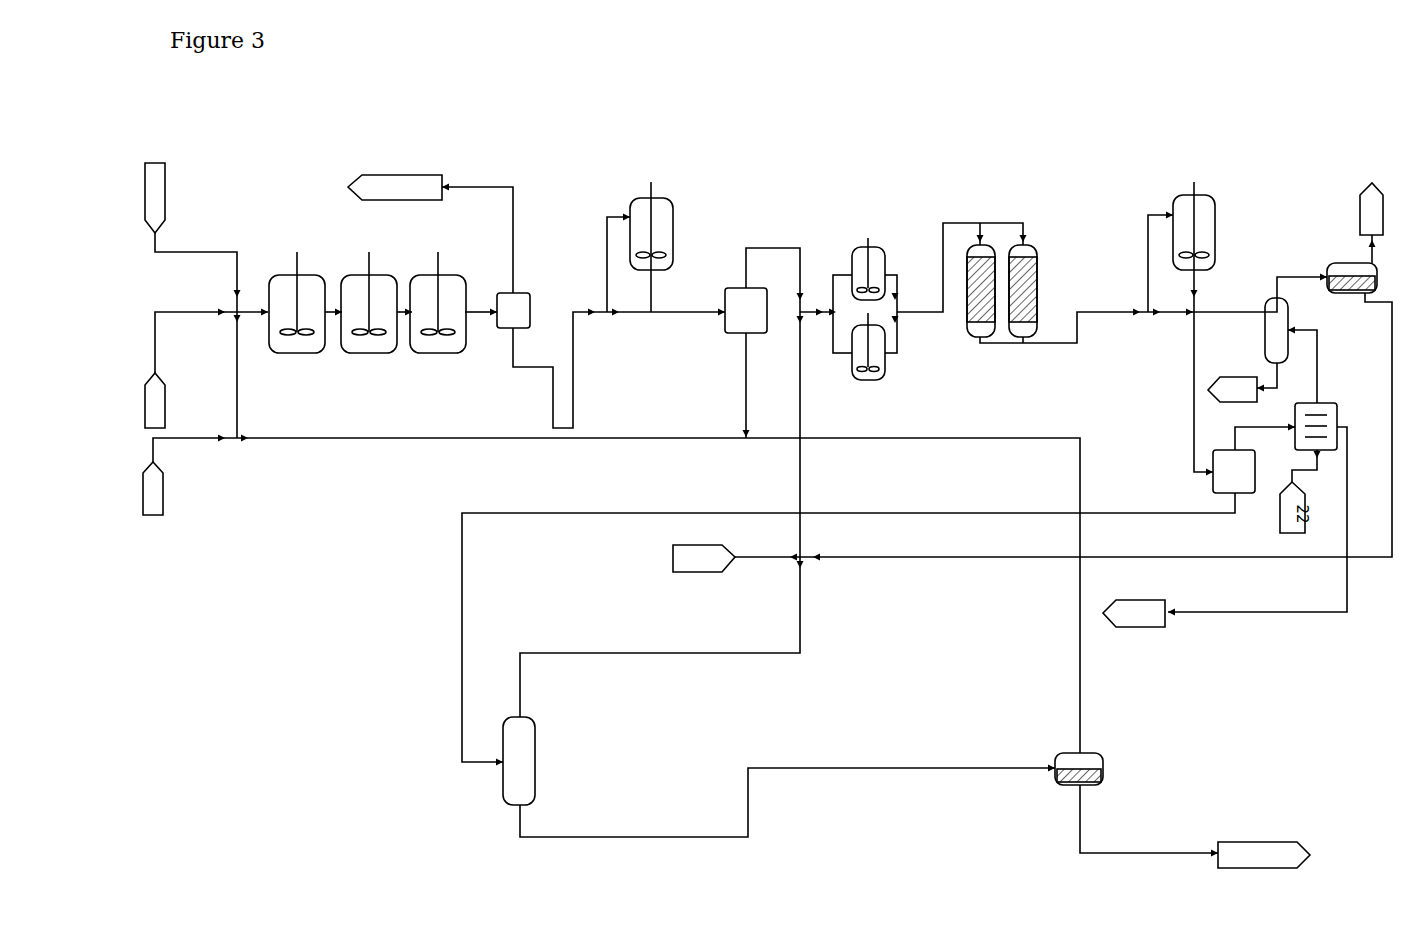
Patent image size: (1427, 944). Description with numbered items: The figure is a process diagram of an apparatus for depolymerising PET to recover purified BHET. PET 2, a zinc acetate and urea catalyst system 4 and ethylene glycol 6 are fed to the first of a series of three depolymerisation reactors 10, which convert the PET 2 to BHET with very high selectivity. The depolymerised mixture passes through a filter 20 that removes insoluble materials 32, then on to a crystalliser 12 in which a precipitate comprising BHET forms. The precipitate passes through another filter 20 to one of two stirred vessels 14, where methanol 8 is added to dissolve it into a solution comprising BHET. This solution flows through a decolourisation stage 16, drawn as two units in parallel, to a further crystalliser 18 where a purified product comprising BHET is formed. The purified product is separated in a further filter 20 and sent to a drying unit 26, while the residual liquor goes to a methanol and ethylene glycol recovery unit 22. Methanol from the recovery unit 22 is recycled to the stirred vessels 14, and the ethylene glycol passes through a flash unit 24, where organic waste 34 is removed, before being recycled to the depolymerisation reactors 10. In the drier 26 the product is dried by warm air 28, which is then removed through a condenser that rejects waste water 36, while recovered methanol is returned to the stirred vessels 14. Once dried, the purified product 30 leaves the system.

The PET 2 is at (159, 198).
The zinc acetate and urea catalyst system 4 is at (159, 400).
The ethylene glycol 6 is at (157, 488).
The methanol 8 is at (704, 558).
The depolymerisation units 10 is at (470, 368).
The crystallisation unit 12 is at (683, 190).
The vessel 14 is at (830, 383).
The impurity removal unit 16 is at (965, 357).
The further crystallisation unit 18 is at (1226, 190).
The filter 20 is at (876, 390).
The methanol and ethylene glycol recovery unit 22 is at (546, 717).
The flash unit 24 is at (1113, 747).
The drying unit 26 is at (1350, 397).
The warm air 28 is at (1375, 209).
The purified product 30 is at (1134, 613).
The insoluble materials 32 is at (395, 187).
The organic waste 34 is at (1264, 855).
The waste water 36 is at (1232, 389).